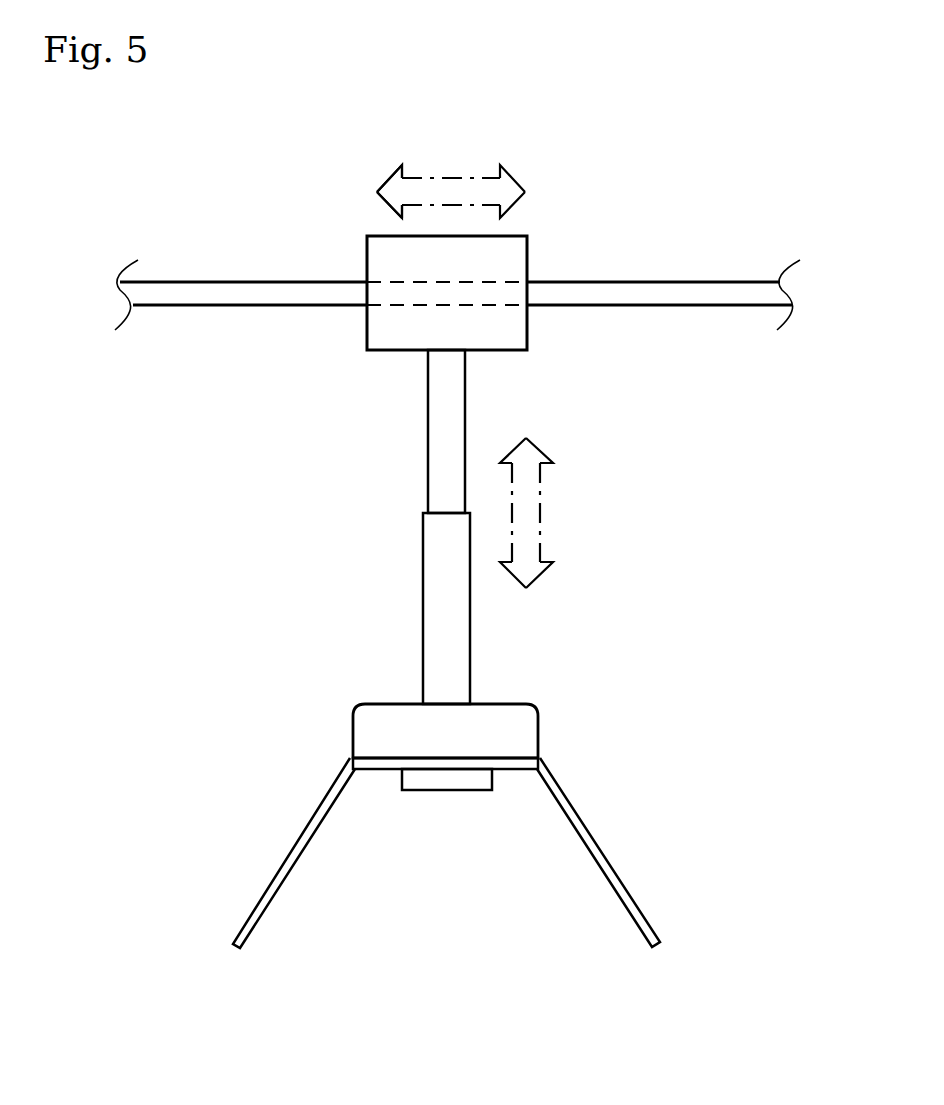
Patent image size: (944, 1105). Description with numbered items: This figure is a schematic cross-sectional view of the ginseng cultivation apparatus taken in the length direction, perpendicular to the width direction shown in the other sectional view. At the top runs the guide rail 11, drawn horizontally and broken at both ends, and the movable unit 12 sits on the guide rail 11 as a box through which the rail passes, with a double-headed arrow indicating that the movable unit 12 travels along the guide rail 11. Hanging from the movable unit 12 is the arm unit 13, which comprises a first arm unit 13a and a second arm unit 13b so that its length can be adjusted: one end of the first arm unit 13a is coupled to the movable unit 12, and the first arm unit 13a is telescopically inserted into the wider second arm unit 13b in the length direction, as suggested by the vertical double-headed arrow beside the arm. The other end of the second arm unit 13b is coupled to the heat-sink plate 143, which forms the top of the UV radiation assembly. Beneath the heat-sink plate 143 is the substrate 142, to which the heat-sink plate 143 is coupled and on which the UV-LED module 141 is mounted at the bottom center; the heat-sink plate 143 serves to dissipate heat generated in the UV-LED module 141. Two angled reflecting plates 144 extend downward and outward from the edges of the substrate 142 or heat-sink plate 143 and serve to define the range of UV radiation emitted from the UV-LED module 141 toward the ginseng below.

The guide rail 11 is at (622, 290).
The movable unit 12 is at (378, 251).
The arm unit 13 is at (492, 527).
The first arm unit 13a is at (460, 392).
The second arm unit 13b is at (452, 628).
The UV-LED module 141 is at (447, 792).
The substrate 142 is at (372, 762).
The heat-sink plate 143 is at (515, 727).
The reflecting plate 144 is at (600, 848).